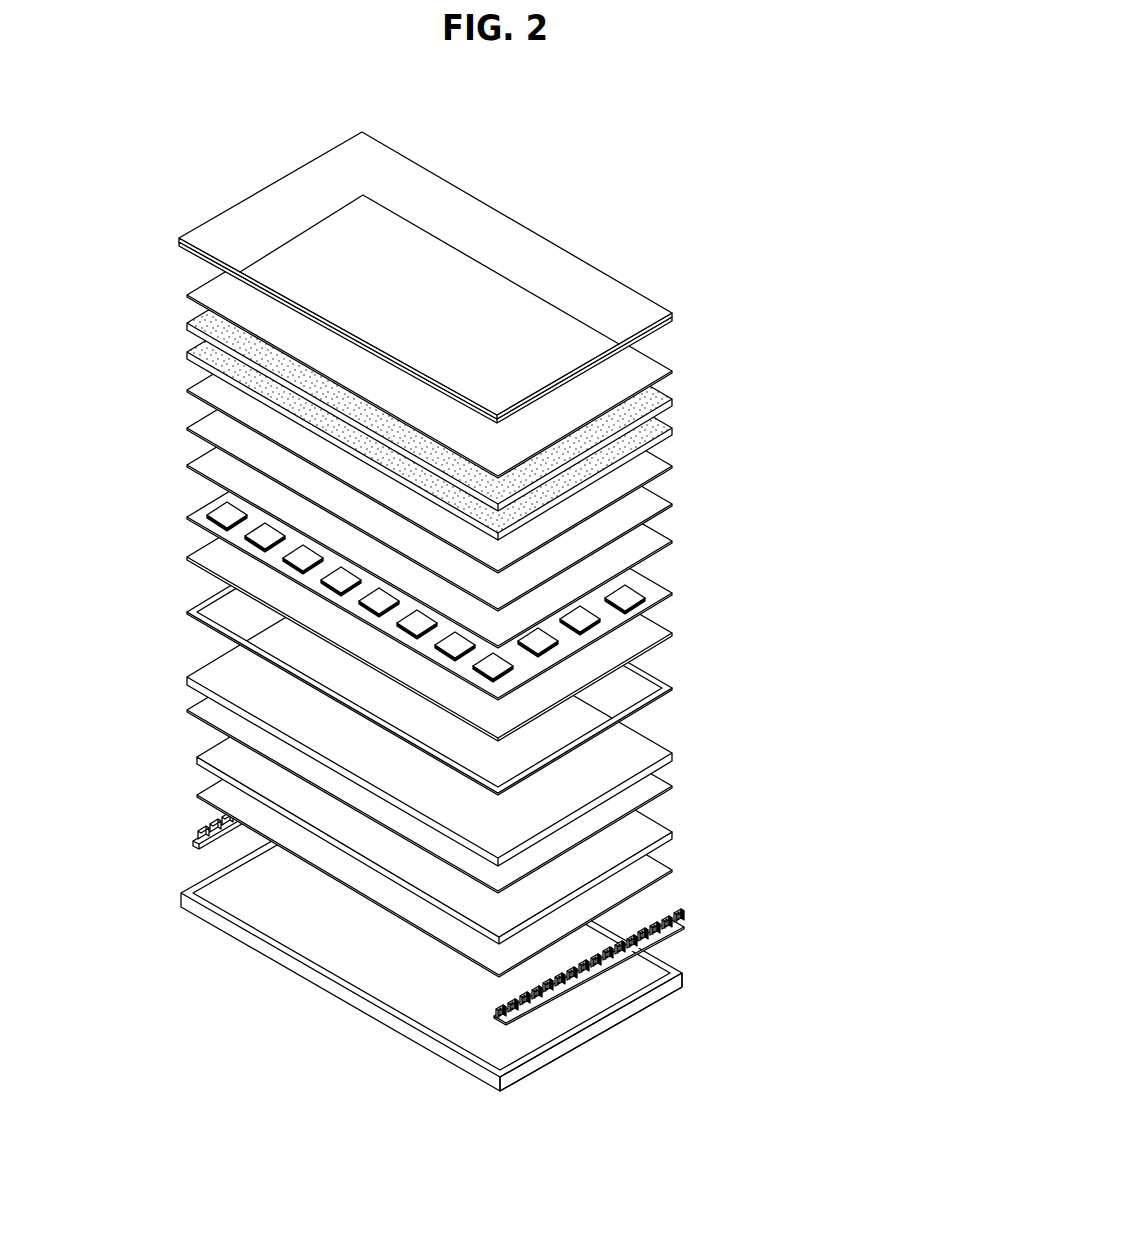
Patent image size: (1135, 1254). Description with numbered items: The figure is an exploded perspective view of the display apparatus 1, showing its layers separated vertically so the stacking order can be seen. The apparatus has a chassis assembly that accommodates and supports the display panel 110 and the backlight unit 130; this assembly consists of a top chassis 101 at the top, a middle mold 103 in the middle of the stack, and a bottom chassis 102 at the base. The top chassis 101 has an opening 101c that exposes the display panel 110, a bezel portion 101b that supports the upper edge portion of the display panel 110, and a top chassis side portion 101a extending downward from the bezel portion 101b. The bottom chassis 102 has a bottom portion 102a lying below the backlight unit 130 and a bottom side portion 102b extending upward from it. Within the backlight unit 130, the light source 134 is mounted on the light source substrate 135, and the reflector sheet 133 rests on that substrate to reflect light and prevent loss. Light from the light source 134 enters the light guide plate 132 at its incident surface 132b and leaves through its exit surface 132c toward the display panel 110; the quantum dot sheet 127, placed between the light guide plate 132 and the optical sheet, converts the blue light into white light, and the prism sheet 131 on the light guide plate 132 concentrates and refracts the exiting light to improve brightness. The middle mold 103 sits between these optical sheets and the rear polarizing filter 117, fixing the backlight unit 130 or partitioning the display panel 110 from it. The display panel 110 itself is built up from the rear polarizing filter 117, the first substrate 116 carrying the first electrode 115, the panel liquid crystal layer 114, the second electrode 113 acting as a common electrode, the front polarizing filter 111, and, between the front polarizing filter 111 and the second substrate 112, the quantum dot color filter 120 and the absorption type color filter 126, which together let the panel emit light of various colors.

The display apparatus 1 is at (556, 181).
The top chassis 101 is at (490, 277).
The top chassis side portion 101a is at (673, 321).
The bezel portion 101b is at (672, 313).
The opening 101c is at (607, 291).
The bottom chassis 102 is at (482, 940).
The bottom portion 102a is at (600, 1010).
The bottom side portion 102b is at (663, 990).
The middle mold 103 is at (670, 691).
The display panel 110 is at (491, 465).
The front polarizing filter 111 is at (672, 466).
The second substrate 112 is at (458, 334).
The second electrode 113 is at (672, 504).
The panel liquid crystal layer 114 is at (672, 541).
The first electrode 115 is at (633, 600).
The first substrate 116 is at (646, 596).
The rear polarizing filter 117 is at (640, 640).
The quantum dot color filter 120 is at (672, 430).
The absorption type color filter 126 is at (672, 401).
The quantum dot sheet 127 is at (660, 787).
The backlight unit 130 is at (502, 798).
The prism sheet 131 is at (473, 719).
The light guide plate 132 is at (477, 798).
The incident surface 132b is at (650, 848).
The exit surface 132c is at (657, 827).
The reflector sheet 133 is at (667, 873).
The light source 134 is at (677, 913).
The light source substrate 135 is at (672, 937).